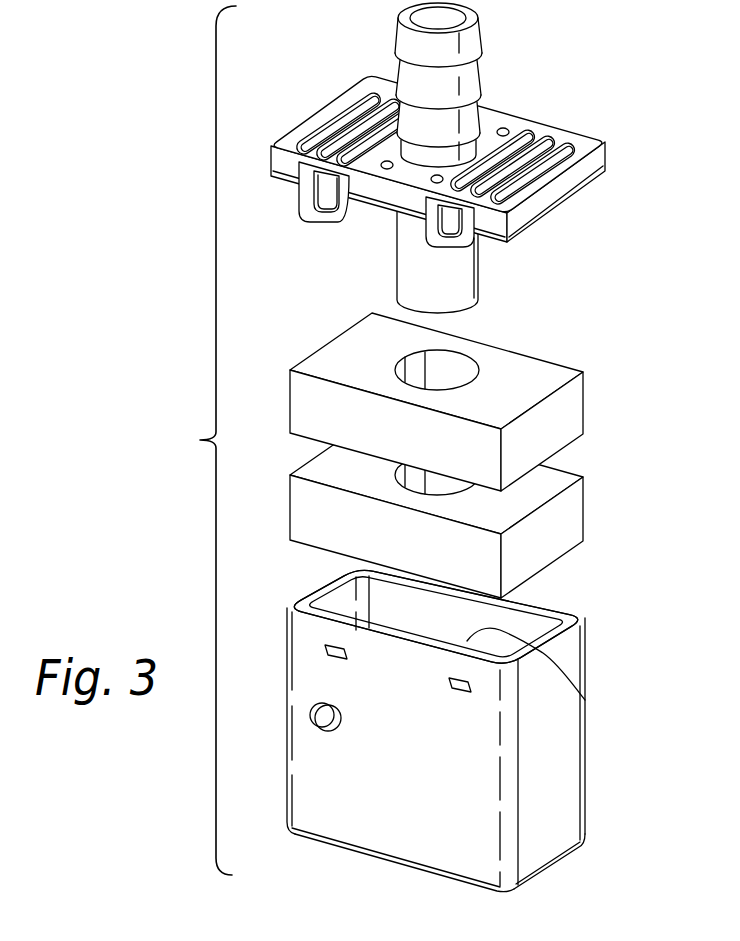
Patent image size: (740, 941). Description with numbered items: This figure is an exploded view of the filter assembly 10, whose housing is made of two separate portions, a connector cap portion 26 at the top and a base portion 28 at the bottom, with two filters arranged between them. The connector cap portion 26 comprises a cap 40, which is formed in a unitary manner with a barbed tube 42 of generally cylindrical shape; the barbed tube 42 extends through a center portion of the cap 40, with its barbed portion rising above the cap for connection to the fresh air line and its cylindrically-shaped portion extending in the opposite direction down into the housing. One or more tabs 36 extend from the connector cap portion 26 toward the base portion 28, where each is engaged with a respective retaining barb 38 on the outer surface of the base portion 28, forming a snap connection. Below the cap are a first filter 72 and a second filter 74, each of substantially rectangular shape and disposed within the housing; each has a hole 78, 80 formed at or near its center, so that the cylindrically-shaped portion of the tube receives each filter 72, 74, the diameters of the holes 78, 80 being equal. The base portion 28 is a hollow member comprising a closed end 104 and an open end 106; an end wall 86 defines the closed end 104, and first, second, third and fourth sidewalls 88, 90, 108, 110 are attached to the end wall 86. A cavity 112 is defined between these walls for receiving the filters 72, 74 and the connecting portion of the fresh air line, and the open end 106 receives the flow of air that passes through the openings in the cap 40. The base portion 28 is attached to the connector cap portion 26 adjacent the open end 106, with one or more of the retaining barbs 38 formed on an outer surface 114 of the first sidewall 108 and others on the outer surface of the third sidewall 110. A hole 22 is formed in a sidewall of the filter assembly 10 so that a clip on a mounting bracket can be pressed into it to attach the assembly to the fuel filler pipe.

The filter assembly 10 is at (201, 440).
The hole 22 is at (320, 723).
The connector cap portion 26 is at (463, 159).
The base portion 28 is at (465, 736).
The tabs 36 is at (322, 213).
The retaining barbs 38 is at (451, 690).
The cap 40 is at (518, 120).
The barbed tube 42 is at (465, 85).
The first filter 72 is at (479, 402).
The second filter 74 is at (473, 508).
The hole 78 is at (453, 370).
The hole 80 is at (443, 485).
The end wall 86 is at (437, 882).
The second sidewall 88 is at (548, 790).
The third sidewall 90 is at (313, 585).
The closed end 104 is at (557, 863).
The open end 106 is at (587, 653).
The first sidewall 108 is at (410, 808).
The fourth sidewall 110 is at (553, 600).
The cavity 112 is at (582, 692).
The outer surface 114 is at (350, 787).